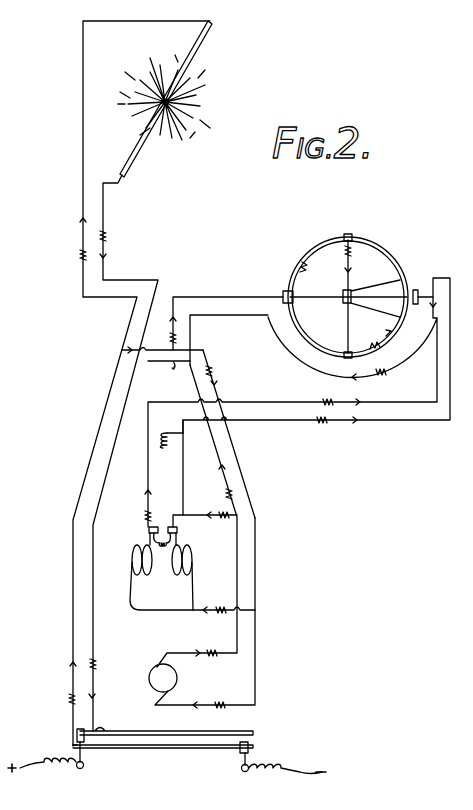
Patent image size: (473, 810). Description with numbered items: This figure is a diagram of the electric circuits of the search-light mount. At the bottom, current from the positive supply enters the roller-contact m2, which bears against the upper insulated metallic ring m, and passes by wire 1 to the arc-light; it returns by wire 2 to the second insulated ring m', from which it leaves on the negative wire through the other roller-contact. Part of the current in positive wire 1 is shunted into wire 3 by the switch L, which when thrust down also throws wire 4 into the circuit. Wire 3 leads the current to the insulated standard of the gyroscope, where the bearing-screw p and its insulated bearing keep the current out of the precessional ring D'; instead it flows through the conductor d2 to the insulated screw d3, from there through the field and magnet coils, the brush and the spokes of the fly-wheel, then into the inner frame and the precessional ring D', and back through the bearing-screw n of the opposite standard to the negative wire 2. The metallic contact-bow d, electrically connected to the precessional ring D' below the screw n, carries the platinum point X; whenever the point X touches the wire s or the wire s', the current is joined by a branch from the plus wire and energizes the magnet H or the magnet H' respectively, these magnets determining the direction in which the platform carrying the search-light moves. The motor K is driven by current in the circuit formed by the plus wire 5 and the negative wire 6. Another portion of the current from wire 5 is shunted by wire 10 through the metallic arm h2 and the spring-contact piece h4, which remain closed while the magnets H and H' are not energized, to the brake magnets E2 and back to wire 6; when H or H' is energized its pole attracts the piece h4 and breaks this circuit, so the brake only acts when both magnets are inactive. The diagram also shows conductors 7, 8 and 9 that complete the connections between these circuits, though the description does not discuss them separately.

The positive wire 1 is at (82, 190).
The negative wire 2 is at (104, 218).
The shunt wire 3 is at (212, 297).
The wire 4 is at (233, 316).
The plus wire 5 is at (258, 581).
The negative wire 6 is at (240, 560).
The conductor 7 is at (206, 613).
The conductor 8 is at (390, 402).
The conductor 9 is at (405, 421).
The wire 10 is at (246, 511).
The switch L is at (160, 363).
The magnets E2 is at (160, 448).
The metallic arm h2 is at (194, 528).
The spring-contact piece h4 is at (203, 541).
The magnet H is at (148, 577).
The magnet H' is at (196, 577).
The motor K is at (177, 678).
The metallic ring m is at (130, 743).
The metallic ring m' is at (199, 760).
The roller-contact m2 is at (75, 738).
The precessional ring D' is at (351, 294).
The platinum point X is at (348, 296).
The metallic contact-bow d is at (318, 300).
The conductor d2 is at (325, 248).
The screw d3 is at (353, 237).
The wire s is at (371, 286).
The wire s' is at (375, 314).
The bearing-screw p is at (283, 295).
The bearing-screw n is at (420, 297).